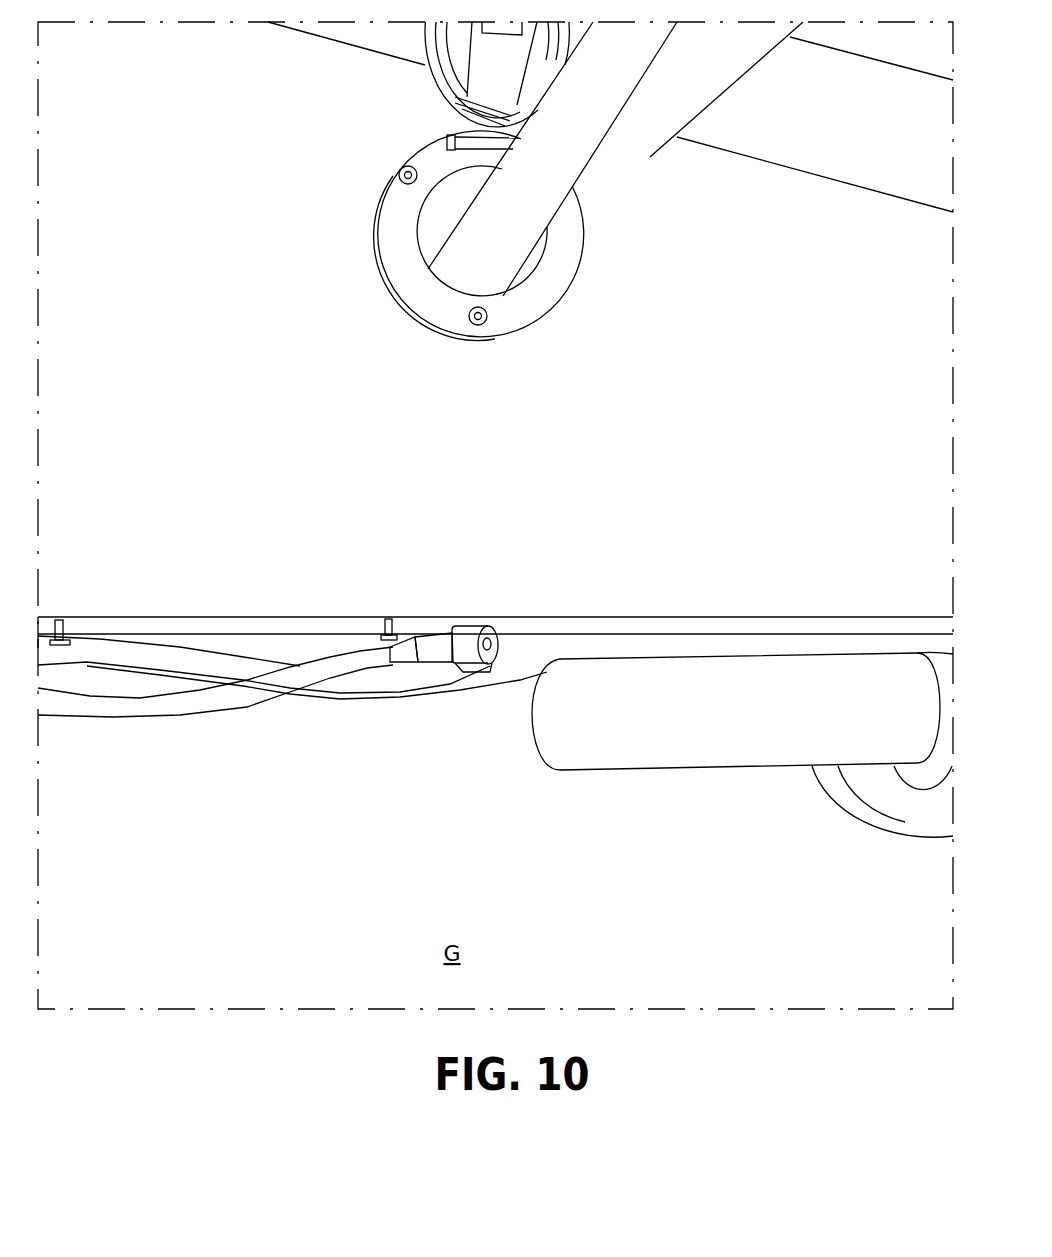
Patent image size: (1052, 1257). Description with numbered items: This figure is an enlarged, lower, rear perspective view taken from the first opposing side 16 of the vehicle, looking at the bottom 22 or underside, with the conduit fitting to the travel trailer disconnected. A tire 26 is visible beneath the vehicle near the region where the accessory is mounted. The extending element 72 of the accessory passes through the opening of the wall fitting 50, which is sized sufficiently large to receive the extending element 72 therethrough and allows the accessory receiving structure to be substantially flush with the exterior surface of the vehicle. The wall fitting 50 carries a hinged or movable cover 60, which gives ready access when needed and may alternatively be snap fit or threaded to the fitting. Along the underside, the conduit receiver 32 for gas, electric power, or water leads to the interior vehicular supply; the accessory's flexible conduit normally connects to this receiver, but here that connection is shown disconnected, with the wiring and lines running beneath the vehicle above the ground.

The first opposing side 16 is at (815, 124).
The bottom 22 is at (310, 643).
The tires 26 is at (860, 815).
The conduit receiver 32 is at (487, 657).
The wall fitting 50 is at (537, 300).
The cover 60 is at (437, 37).
The extending element 72 is at (690, 120).